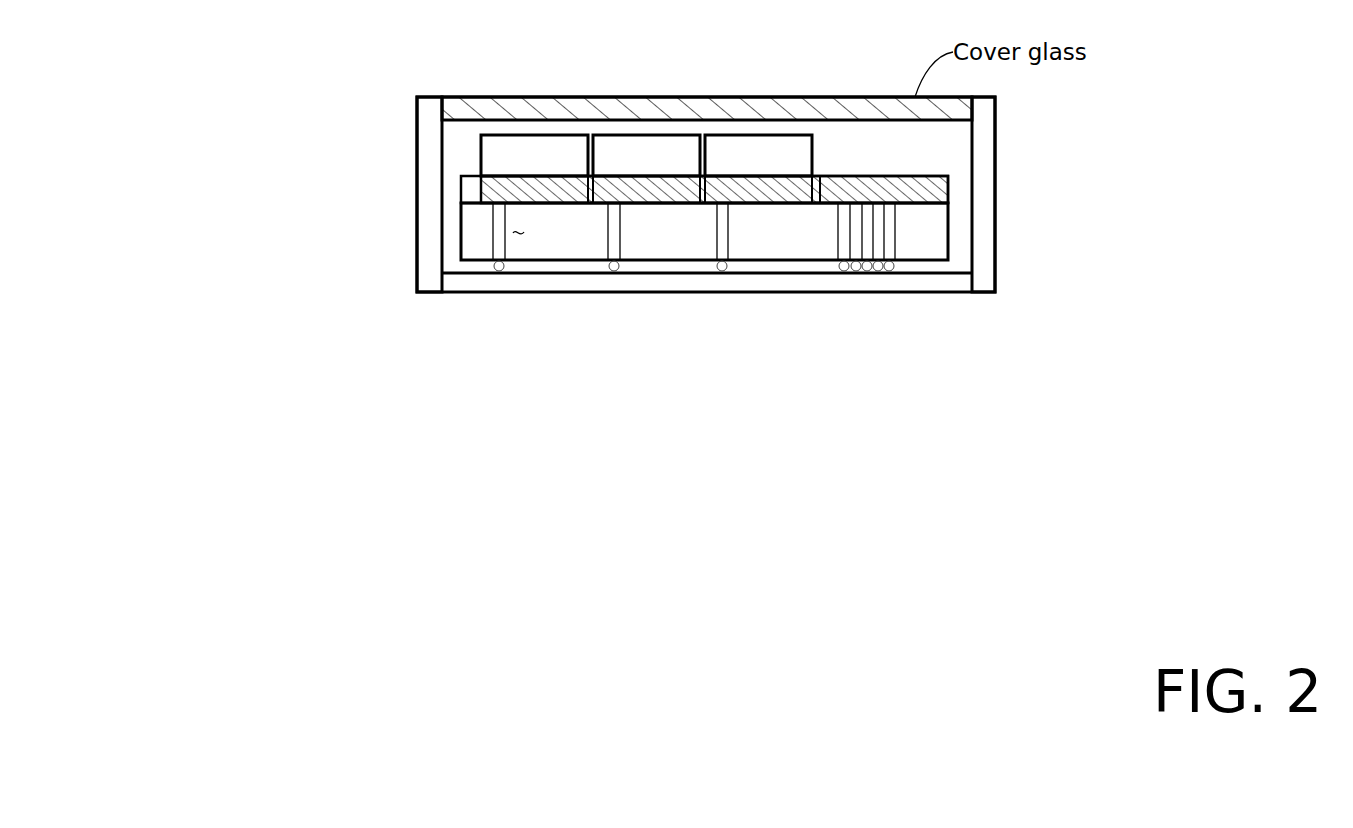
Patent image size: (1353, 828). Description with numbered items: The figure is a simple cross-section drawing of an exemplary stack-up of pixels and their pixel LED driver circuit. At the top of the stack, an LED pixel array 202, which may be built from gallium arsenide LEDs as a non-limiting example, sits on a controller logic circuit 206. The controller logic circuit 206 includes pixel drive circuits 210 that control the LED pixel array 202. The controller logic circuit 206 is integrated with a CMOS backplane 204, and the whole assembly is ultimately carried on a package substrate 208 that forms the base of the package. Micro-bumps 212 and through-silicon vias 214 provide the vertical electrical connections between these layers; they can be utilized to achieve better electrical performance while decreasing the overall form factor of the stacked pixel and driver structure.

The LED pixel array 202 is at (535, 130).
The CMOS backplane 204 is at (927, 240).
The controller logic circuit 206 is at (935, 167).
The package substrate 208 is at (863, 298).
The pixel drive circuits 210 is at (478, 188).
The micro-bumps 212 is at (734, 264).
The through-silicon vias (TSVs) 214 is at (505, 247).